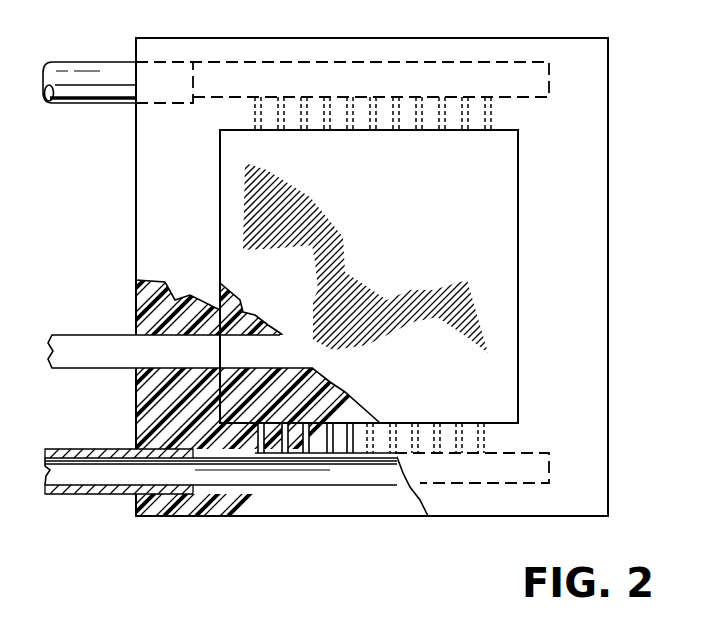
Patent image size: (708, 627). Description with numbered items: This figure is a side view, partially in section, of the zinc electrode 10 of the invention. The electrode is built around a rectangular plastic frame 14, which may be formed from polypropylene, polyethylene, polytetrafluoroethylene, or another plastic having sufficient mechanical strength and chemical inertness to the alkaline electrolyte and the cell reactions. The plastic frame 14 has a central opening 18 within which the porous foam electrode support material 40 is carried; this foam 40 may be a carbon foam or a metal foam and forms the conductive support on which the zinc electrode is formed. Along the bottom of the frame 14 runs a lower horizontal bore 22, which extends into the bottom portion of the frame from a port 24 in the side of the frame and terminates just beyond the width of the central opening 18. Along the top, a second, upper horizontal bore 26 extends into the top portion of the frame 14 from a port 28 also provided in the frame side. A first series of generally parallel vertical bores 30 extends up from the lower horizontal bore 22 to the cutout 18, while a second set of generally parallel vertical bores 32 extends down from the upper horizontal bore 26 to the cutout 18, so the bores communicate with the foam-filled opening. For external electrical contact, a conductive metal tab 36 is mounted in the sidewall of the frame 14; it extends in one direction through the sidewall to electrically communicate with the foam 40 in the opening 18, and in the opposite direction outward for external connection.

The zinc electrode 10 is at (656, 123).
The plastic frame 14 is at (612, 228).
The central opening 18 is at (250, 408).
The lower horizontal bore 22 is at (291, 478).
The port 24 is at (140, 449).
The upper horizontal bore 26 is at (510, 78).
The port 28 is at (136, 62).
The first series of vertical bores 30 is at (332, 433).
The second set of vertical bores 32 is at (403, 107).
The conductive metal tab 36 is at (82, 334).
The porous foam electrode support material 40 is at (410, 277).